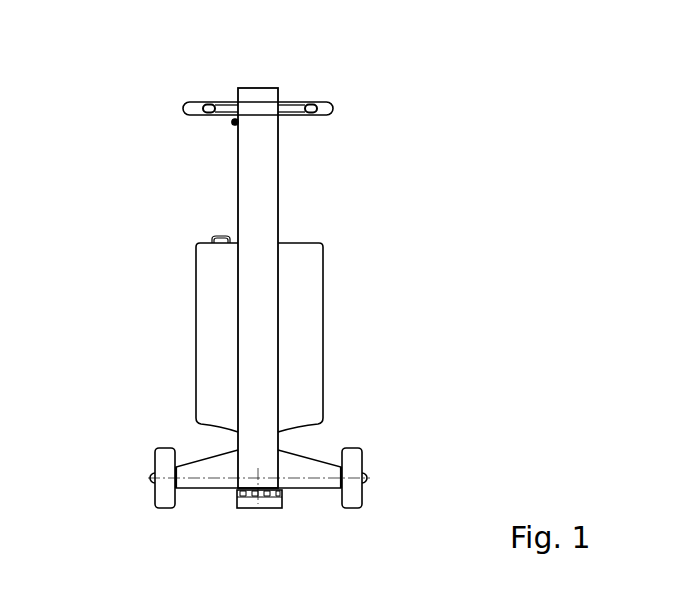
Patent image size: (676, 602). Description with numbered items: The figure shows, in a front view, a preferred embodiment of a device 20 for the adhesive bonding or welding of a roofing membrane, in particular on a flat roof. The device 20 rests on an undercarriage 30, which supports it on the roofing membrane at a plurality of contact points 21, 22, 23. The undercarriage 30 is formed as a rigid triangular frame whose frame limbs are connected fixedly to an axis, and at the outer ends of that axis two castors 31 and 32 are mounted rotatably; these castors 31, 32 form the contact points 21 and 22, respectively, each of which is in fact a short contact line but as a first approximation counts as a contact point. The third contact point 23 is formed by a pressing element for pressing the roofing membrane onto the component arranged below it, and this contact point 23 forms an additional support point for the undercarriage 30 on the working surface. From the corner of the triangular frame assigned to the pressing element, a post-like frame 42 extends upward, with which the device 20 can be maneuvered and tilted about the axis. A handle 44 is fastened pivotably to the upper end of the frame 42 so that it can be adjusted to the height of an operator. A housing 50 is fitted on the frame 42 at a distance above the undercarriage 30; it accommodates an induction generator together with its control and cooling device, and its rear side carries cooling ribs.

The device 20 is at (346, 233).
The contact point 21 is at (167, 510).
The contact point 22 is at (348, 510).
The contact point 23 is at (255, 507).
The undercarriage 30 is at (323, 444).
The castor 31 is at (155, 453).
The castor 32 is at (362, 450).
The post-like frame 42 is at (258, 98).
The handle 44 is at (331, 102).
The housing 50 is at (303, 323).